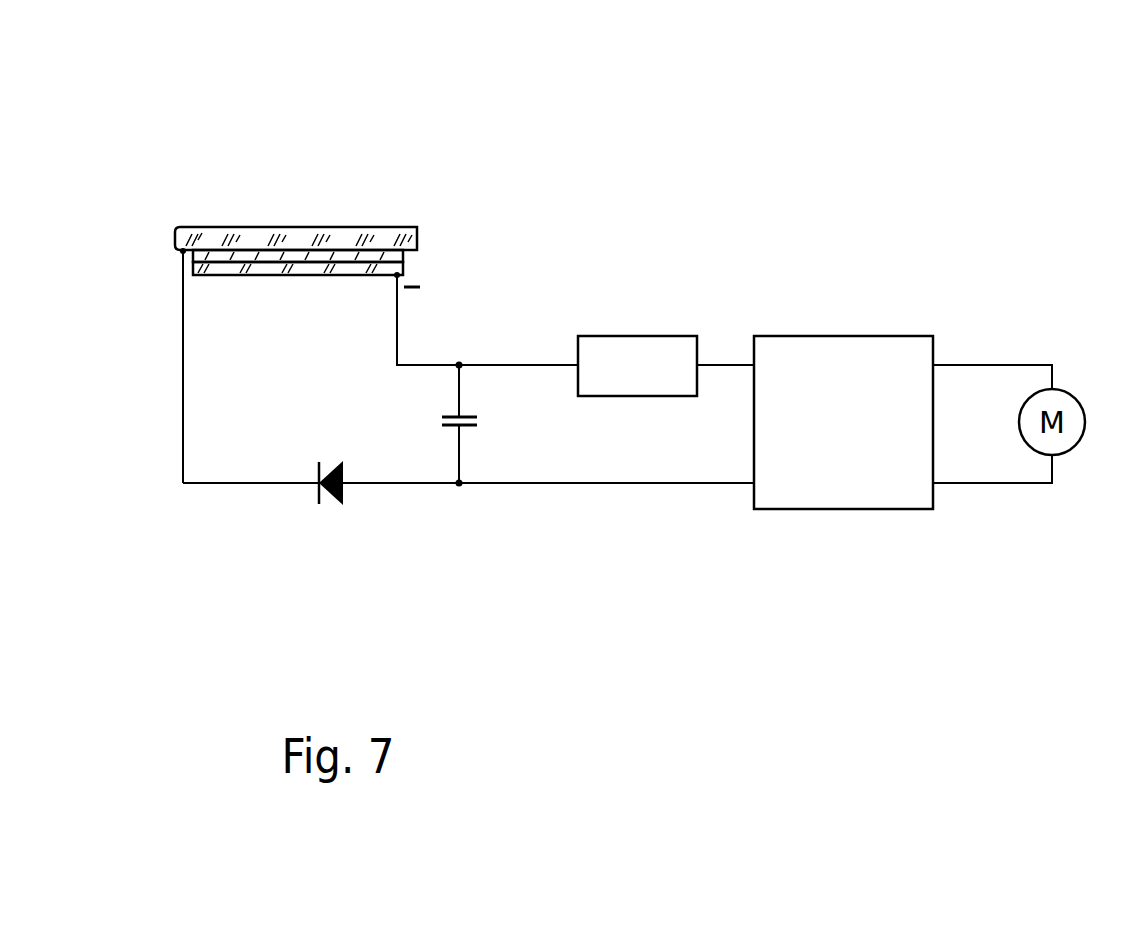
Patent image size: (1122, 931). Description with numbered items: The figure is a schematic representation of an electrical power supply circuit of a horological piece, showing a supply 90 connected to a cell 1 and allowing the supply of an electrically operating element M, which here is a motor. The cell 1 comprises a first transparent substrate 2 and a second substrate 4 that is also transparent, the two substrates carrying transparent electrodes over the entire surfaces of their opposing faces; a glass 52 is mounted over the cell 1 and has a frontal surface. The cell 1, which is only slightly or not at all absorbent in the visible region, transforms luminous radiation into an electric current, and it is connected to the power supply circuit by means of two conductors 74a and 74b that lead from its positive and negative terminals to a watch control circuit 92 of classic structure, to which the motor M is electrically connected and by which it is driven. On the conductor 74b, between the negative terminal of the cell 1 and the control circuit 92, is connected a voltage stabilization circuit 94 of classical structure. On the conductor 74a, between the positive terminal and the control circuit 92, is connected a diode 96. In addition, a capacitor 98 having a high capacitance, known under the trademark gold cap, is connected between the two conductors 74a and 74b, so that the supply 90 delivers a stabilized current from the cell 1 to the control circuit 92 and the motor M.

The cell 1 is at (306, 190).
The glass 52 is at (385, 243).
The first transparent substrate 2 is at (402, 253).
The second substrate 4 is at (402, 265).
The conductor 74a is at (183, 368).
The conductor 74b is at (524, 364).
The voltage stabilization circuit 94 is at (650, 355).
The watch control circuit 92 is at (843, 353).
The capacitor 98 is at (467, 428).
The diode 96 is at (333, 500).
The supply 90 is at (569, 506).